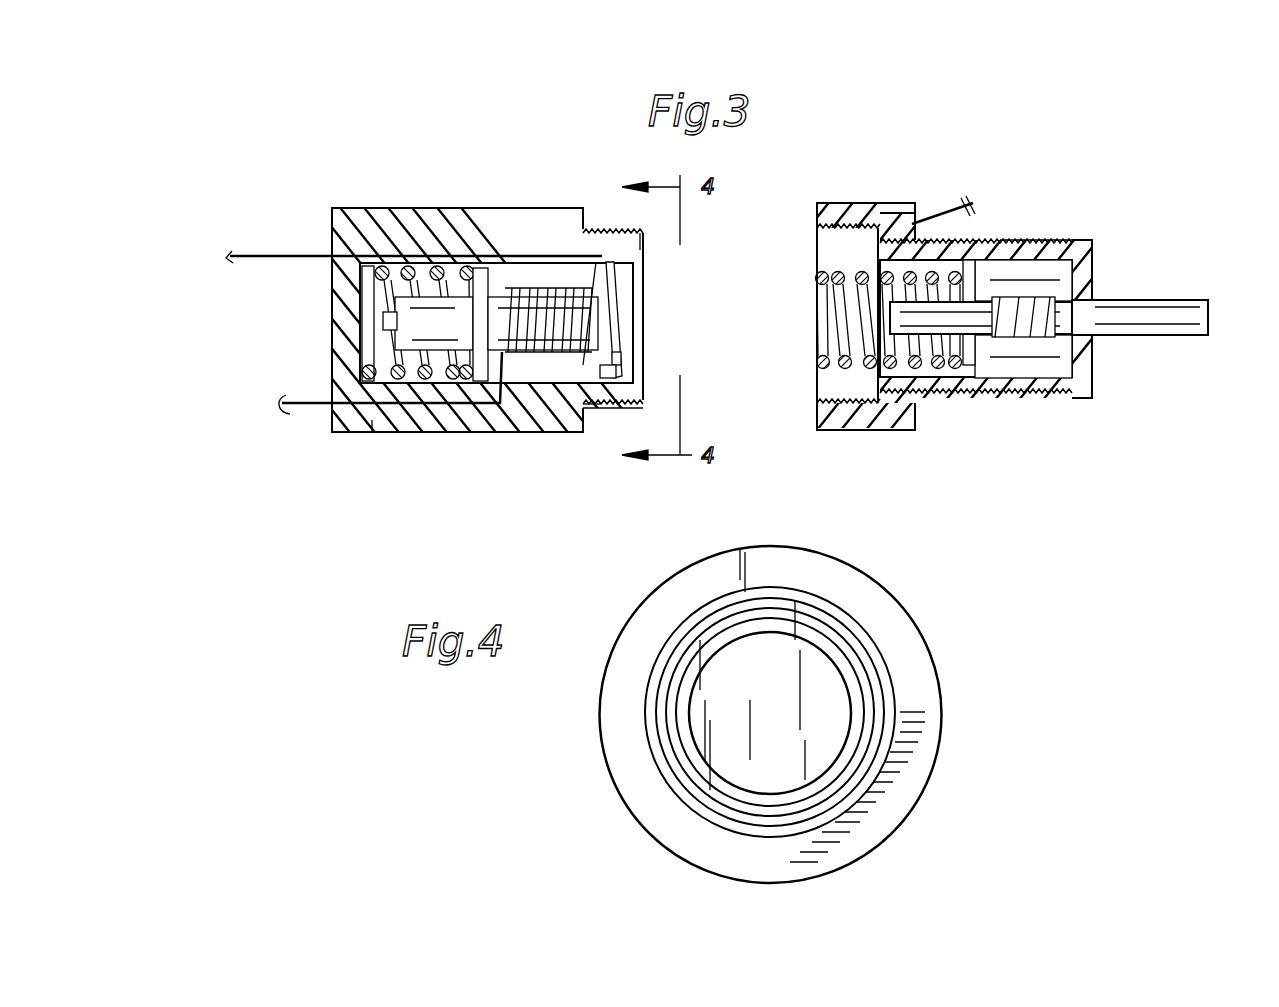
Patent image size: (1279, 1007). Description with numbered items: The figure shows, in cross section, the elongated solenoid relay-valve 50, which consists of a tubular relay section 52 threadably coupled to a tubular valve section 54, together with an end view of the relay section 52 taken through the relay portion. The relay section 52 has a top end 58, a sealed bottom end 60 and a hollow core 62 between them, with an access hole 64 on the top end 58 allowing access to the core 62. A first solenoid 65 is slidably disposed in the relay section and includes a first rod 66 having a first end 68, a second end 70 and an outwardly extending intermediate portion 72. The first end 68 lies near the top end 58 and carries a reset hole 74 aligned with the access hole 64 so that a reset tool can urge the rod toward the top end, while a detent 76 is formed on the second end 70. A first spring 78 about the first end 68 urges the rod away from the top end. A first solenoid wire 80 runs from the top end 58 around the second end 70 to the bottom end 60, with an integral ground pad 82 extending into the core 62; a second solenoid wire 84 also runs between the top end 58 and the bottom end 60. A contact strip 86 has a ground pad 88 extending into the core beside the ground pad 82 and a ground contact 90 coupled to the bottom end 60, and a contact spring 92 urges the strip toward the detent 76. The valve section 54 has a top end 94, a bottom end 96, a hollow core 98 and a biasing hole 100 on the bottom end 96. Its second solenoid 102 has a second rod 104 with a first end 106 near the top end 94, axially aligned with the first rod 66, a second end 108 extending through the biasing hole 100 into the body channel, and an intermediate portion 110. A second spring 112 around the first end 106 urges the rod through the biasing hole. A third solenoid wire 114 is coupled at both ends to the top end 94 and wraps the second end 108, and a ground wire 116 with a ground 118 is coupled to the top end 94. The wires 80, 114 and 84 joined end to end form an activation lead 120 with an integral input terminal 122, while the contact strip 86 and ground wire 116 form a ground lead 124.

In FIG. 3, the solenoid relay-valve 50 is at (327, 76).
In FIG. 3, the relay section 52 is at (566, 518).
In FIG. 4, the relay section 52 is at (933, 697).
In FIG. 3, the valve section 54 is at (830, 530).
In FIG. 3, the top end 58 is at (330, 343).
In FIG. 3, the sealed bottom end 60 is at (647, 385).
In FIG. 3, the hollow core 62 is at (530, 262).
In FIG. 3, the access hole 64 is at (332, 316).
In FIG. 3, the first solenoid 65 is at (542, 392).
In FIG. 3, the first rod 66 is at (458, 342).
In FIG. 3, the first end 68 is at (388, 292).
In FIG. 3, the second end 70 is at (562, 300).
In FIG. 3, the intermediate portion 72 is at (480, 275).
In FIG. 3, the reset hole 74 is at (334, 400).
In FIG. 3, the detent 76 is at (613, 340).
In FIG. 3, the first spring 78 is at (372, 432).
In FIG. 3, the first solenoid wire 80 is at (286, 405).
In FIG. 3, the ground pad 82 is at (608, 406).
In FIG. 3, the second solenoid wire 84 is at (268, 257).
In FIG. 3, the contact strip 86 is at (623, 350).
In FIG. 3, the ground pad 88 is at (630, 368).
In FIG. 3, the ground contact 90 is at (645, 236).
In FIG. 3, the contact spring 92 is at (620, 337).
In FIG. 3, the top end 94 is at (815, 392).
In FIG. 3, the bottom end 96 is at (1100, 270).
In FIG. 3, the hollow core 98 is at (1035, 283).
In FIG. 3, the biasing hole 100 is at (1097, 298).
In FIG. 3, the second solenoid 102 is at (1019, 394).
In FIG. 3, the second rod 104 is at (1100, 322).
In FIG. 3, the first end 106 is at (955, 403).
In FIG. 3, the second end 108 is at (1174, 312).
In FIG. 3, the intermediate portion 110 is at (1035, 237).
In FIG. 3, the second spring 112 is at (835, 276).
In FIG. 3, the third solenoid wire 114 is at (1066, 398).
In FIG. 3, the ground wire 116 is at (923, 220).
In FIG. 3, the ground 118 is at (975, 203).
In FIG. 3, the activation lead 120 is at (885, 428).
In FIG. 3, the input terminal 122 is at (228, 228).
In FIG. 3, the ground lead 124 is at (914, 205).